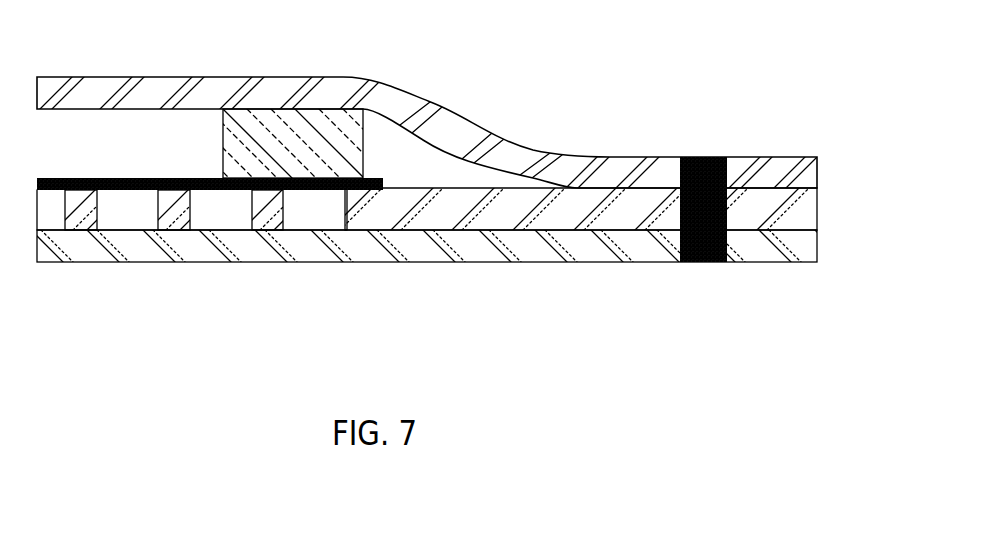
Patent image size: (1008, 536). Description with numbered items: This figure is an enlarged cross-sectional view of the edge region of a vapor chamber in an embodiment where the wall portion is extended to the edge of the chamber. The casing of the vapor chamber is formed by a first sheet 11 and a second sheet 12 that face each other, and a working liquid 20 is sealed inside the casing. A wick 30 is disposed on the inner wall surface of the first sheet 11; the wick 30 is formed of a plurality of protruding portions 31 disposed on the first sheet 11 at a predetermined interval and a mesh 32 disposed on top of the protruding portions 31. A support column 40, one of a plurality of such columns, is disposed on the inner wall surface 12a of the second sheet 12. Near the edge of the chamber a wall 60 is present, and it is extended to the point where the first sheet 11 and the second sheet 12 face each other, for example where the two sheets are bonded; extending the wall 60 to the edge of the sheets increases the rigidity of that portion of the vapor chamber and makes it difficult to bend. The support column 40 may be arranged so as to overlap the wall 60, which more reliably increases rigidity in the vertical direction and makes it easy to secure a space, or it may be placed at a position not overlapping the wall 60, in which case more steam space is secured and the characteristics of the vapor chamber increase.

The first sheet 11 is at (797, 250).
The second sheet 12 is at (460, 94).
The inner wall surface of the second sheet 12a is at (467, 165).
The working liquid 20 is at (330, 207).
The wick 30 is at (210, 287).
The protruding portions 31 is at (175, 200).
The mesh 32 is at (117, 190).
The support column 40 is at (288, 110).
The wall 60 is at (483, 207).